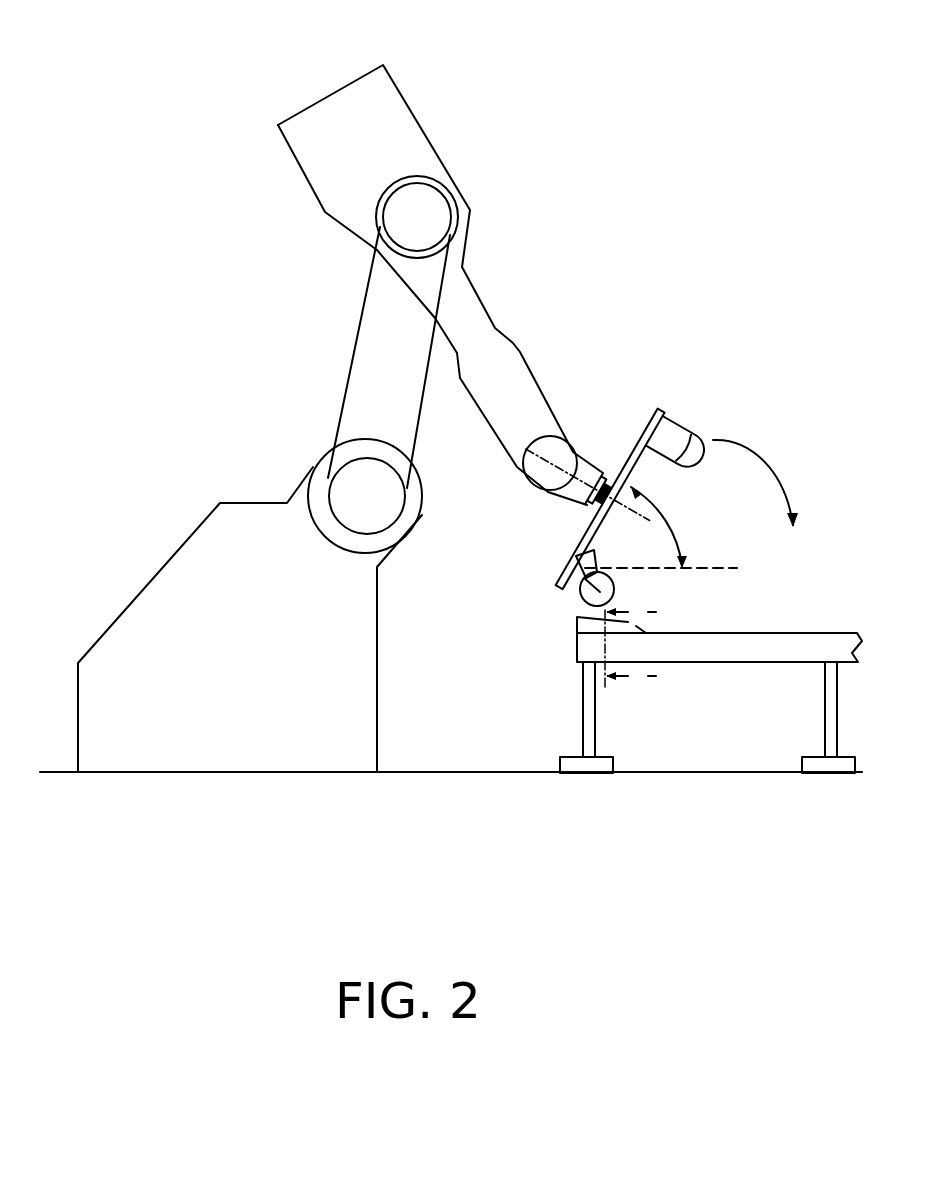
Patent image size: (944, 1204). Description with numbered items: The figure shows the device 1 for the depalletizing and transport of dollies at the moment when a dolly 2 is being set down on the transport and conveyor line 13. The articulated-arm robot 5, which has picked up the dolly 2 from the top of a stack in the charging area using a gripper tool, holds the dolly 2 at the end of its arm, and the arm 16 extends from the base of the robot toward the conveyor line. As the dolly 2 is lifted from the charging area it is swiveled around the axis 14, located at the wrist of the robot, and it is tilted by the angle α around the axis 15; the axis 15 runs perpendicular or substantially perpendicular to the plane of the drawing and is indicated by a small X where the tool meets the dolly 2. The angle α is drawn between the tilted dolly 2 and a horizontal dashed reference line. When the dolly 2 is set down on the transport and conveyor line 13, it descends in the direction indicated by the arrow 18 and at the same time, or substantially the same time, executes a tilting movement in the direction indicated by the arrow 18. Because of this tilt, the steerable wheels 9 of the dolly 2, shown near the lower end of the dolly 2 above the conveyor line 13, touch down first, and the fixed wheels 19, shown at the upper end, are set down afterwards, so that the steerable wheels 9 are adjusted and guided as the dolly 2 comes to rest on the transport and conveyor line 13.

The device for the depalletizing and transport of dollies 1 is at (183, 180).
The dolly 2 is at (659, 412).
The articulated-arm robot 5 is at (165, 608).
The steerable wheels 9 is at (598, 596).
The transport and conveyor line 13 is at (783, 645).
The axis 14 is at (553, 462).
The axis 15 is at (602, 507).
The robot arm 16 is at (480, 345).
The arrow 18 is at (757, 450).
The fixed wheels 19 is at (680, 440).